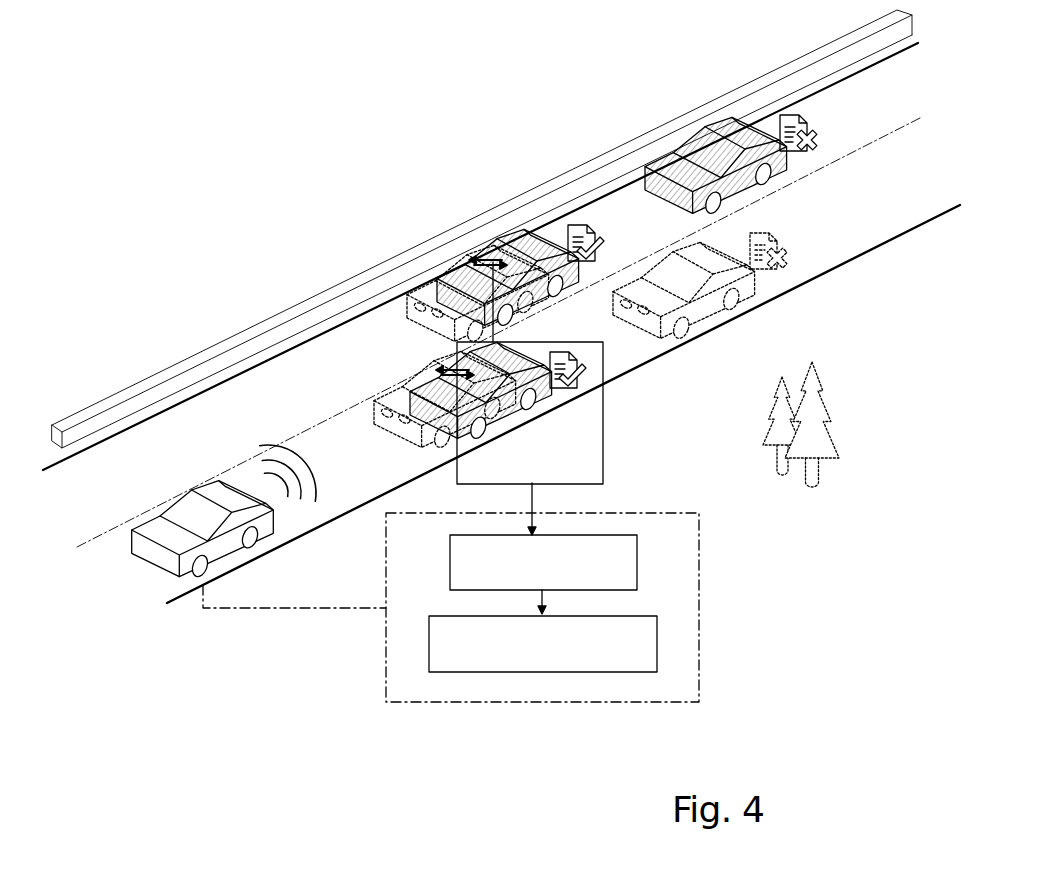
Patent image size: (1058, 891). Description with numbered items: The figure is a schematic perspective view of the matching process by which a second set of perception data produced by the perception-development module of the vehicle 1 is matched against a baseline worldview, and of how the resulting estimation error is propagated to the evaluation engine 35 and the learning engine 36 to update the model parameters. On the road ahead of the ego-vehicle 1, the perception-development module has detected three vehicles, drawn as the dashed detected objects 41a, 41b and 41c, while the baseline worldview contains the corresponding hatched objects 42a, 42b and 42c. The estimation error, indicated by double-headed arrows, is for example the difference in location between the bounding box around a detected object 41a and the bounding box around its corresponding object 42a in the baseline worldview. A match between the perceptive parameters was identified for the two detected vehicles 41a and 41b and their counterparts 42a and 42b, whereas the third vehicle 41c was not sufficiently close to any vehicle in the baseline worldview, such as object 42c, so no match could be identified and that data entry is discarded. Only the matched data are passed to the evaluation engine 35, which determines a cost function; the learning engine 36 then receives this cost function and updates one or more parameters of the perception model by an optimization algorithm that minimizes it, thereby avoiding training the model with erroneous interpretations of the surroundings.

The vehicle 1 is at (149, 563).
The evaluation engine 35 is at (637, 556).
The learning engine 36 is at (657, 652).
The detected object 41a is at (418, 363).
The detected object 41b is at (412, 302).
The third vehicle 41c is at (742, 290).
The corresponding object 42a is at (552, 394).
The corresponding object 42b is at (536, 236).
The corresponding object 42c is at (713, 143).